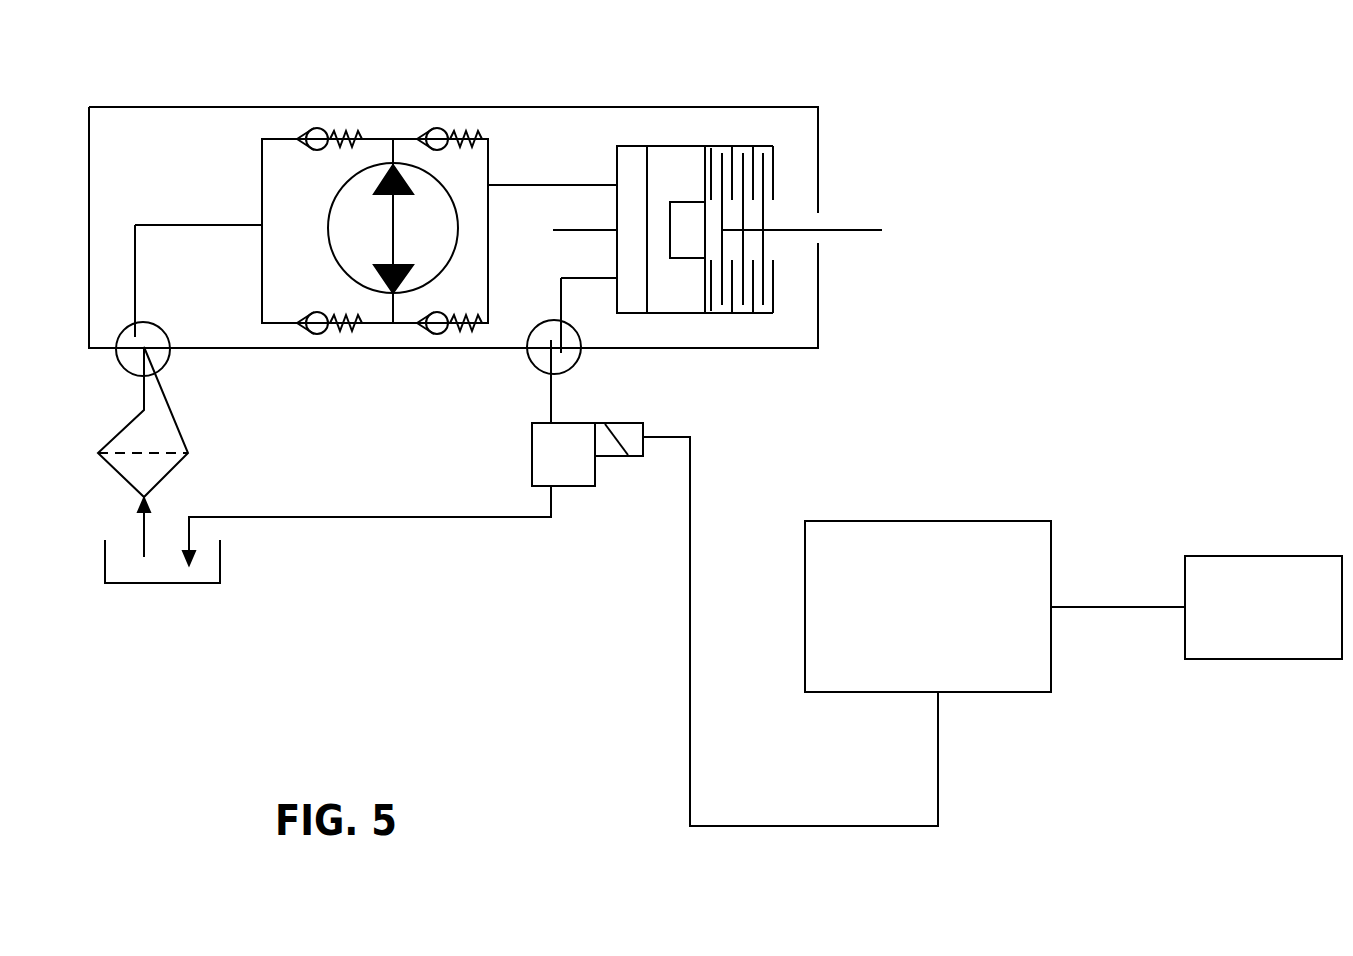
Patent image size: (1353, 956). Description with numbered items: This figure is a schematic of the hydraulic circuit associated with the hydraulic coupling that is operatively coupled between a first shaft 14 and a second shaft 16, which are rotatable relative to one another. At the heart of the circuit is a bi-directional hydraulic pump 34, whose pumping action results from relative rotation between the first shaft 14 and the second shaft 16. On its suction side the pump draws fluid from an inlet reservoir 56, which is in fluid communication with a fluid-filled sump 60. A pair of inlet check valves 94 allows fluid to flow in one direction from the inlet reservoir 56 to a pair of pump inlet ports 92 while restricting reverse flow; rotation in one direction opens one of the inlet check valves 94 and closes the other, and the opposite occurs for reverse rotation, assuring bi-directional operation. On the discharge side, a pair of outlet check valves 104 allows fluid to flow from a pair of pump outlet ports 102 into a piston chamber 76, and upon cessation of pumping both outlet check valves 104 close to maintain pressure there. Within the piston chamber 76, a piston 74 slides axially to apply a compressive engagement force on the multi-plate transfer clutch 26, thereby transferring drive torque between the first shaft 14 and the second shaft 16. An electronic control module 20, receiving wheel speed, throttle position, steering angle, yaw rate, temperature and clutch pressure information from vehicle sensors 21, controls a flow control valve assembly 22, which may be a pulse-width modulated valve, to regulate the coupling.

The first shaft 14 is at (584, 230).
The second shaft 16 is at (838, 230).
The electronic control module 20 is at (927, 521).
The vehicle sensors 21 is at (1272, 556).
The flow control valve assembly 22 is at (578, 423).
The transfer clutch 26 is at (745, 147).
The hydraulic pump 34 is at (330, 242).
The inlet reservoir 56 is at (198, 223).
The sump 60 is at (168, 570).
The piston 74 is at (685, 157).
The piston chamber 76 is at (633, 152).
The pump inlet ports 92 is at (373, 138).
The inlet check valves 94 is at (298, 137).
The pump outlet ports 102 is at (410, 138).
The outlet check valves 104 is at (430, 128).